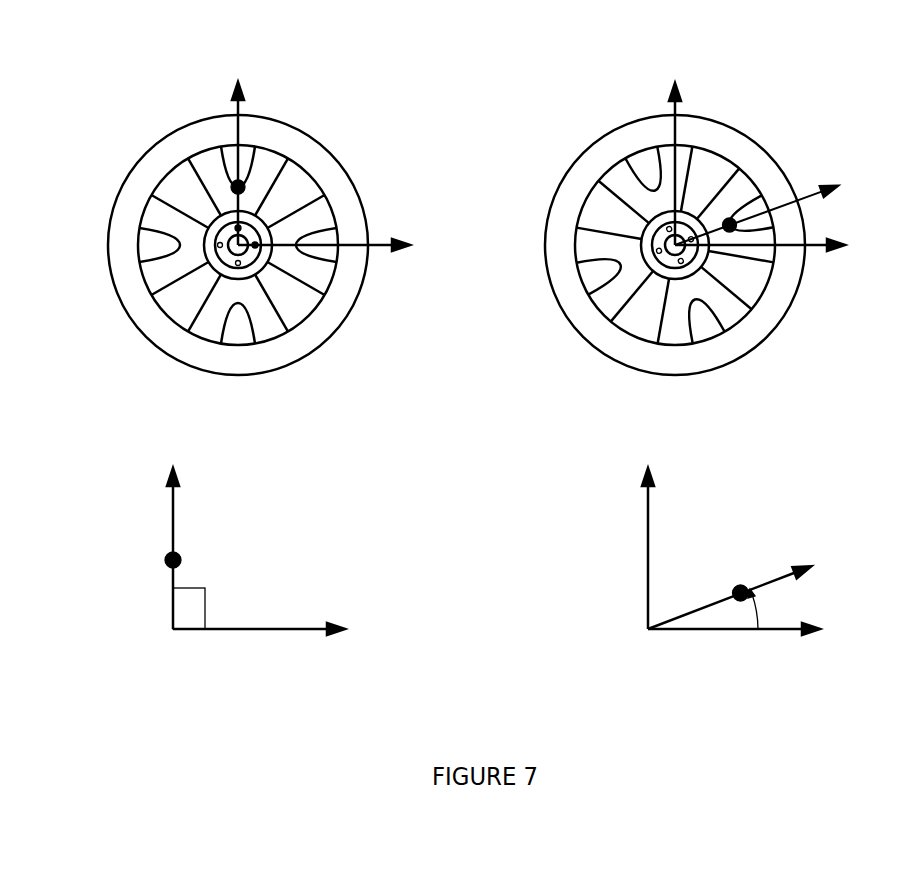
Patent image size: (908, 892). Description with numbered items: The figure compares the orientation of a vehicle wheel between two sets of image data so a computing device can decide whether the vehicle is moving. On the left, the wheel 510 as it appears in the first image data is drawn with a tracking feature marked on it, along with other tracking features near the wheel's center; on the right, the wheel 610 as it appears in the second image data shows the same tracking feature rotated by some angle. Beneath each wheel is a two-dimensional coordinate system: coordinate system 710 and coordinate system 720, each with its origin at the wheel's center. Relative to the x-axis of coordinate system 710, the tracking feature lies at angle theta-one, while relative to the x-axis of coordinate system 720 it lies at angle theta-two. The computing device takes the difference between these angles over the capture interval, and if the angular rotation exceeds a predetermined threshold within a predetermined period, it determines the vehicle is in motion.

The wheel 510 is at (224, 402).
The wheel 610 is at (661, 402).
The 2D coordinate system 710 is at (244, 661).
The 2D coordinate system 720 is at (716, 661).